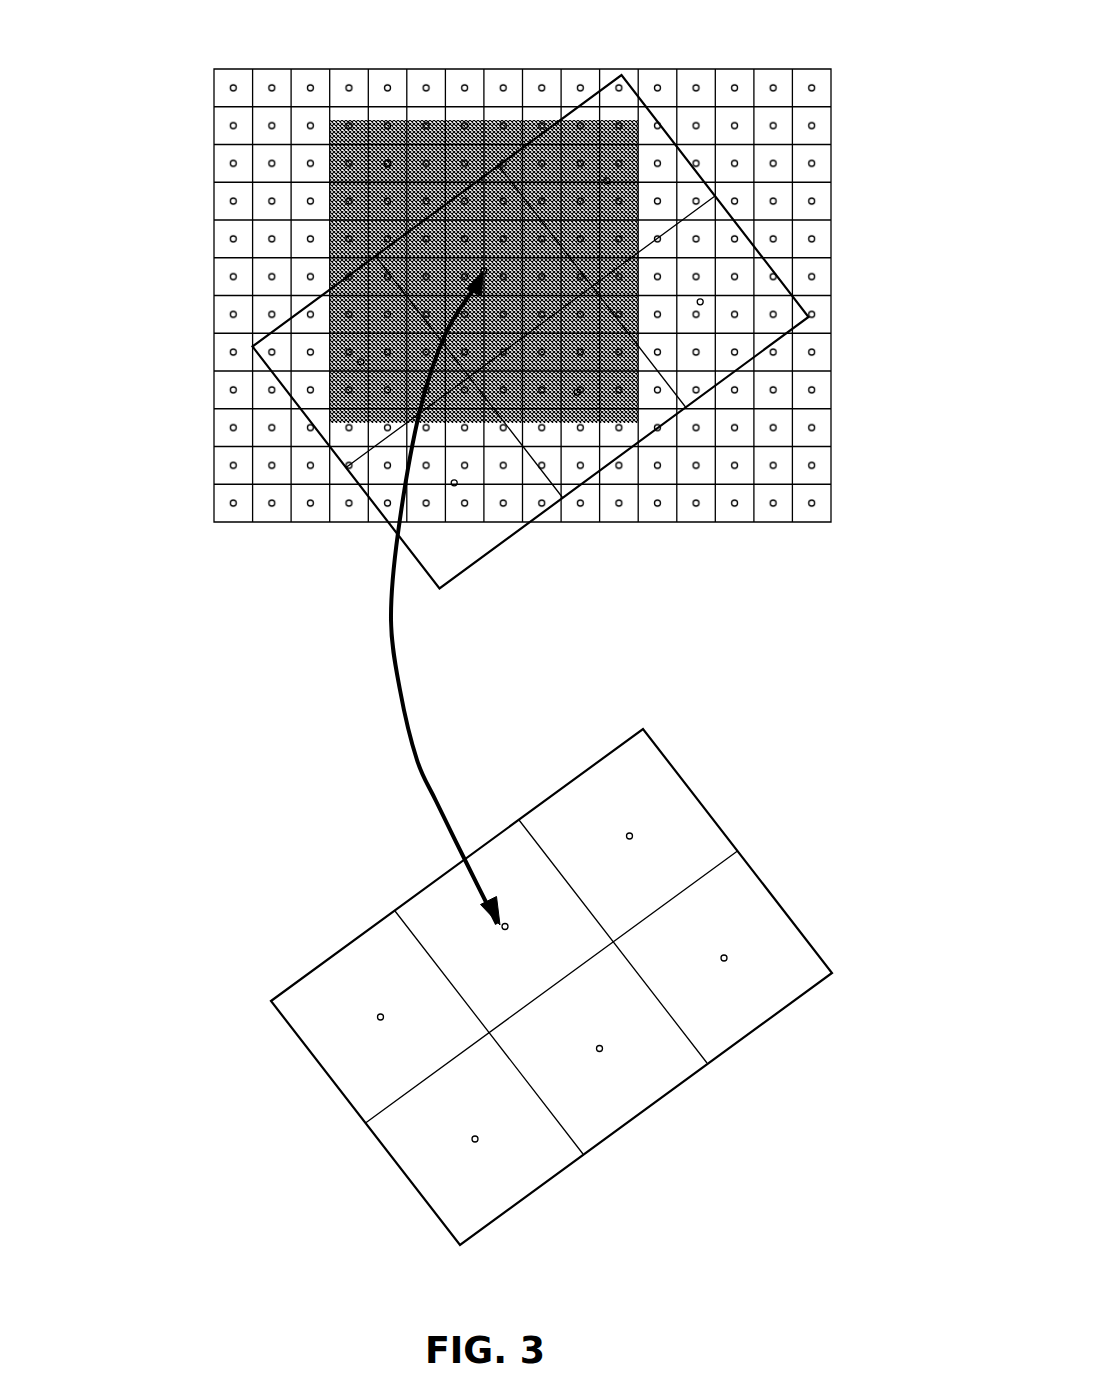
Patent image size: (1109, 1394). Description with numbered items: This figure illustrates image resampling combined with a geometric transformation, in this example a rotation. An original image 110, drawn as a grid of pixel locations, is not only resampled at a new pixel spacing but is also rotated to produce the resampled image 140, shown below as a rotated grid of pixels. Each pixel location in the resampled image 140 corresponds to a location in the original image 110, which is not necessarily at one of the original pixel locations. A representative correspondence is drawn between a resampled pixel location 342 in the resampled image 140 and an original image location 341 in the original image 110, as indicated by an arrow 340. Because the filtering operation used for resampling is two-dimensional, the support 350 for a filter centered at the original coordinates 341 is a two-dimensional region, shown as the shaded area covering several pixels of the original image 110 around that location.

The original image 110 is at (737, 70).
The support 350 is at (387, 163).
The original image location 341 is at (466, 275).
The arrow 340 is at (400, 690).
The resampled image 140 is at (663, 748).
The resampled pixel location 342 is at (503, 924).